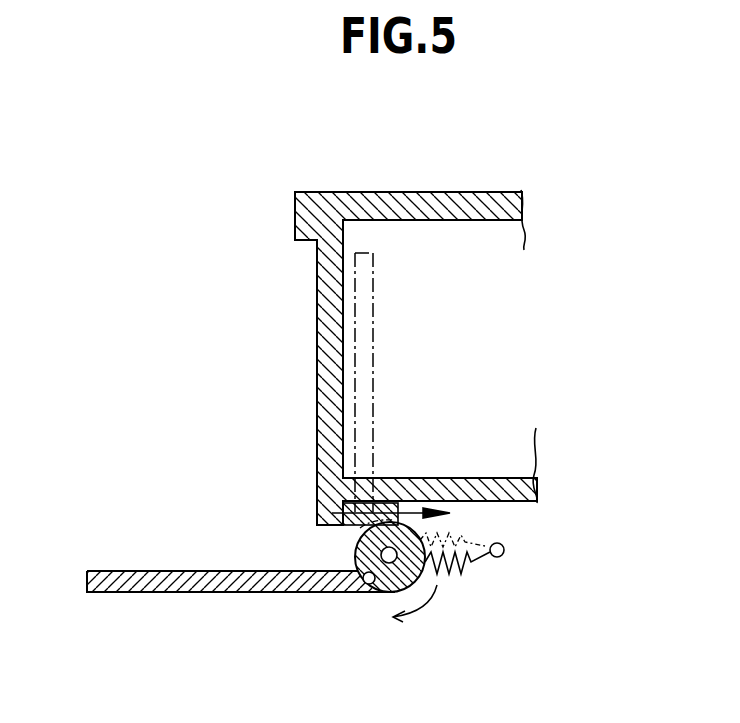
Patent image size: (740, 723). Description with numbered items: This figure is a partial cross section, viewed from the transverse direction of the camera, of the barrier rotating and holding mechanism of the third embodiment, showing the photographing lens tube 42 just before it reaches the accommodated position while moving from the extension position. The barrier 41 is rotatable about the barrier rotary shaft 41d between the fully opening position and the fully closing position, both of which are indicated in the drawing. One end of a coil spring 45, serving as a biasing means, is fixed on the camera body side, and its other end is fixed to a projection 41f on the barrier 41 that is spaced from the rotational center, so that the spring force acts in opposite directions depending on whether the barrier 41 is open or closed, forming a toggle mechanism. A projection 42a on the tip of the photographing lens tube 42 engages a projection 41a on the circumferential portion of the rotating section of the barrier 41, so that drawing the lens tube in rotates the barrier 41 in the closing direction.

The photographing lens tube 42 is at (415, 205).
The projection 42a is at (320, 527).
The barrier 41 is at (368, 292).
The projection 41a is at (390, 504).
The barrier rotary shaft 41d is at (381, 555).
The projection 41f is at (369, 585).
The coil spring 45 is at (443, 572).